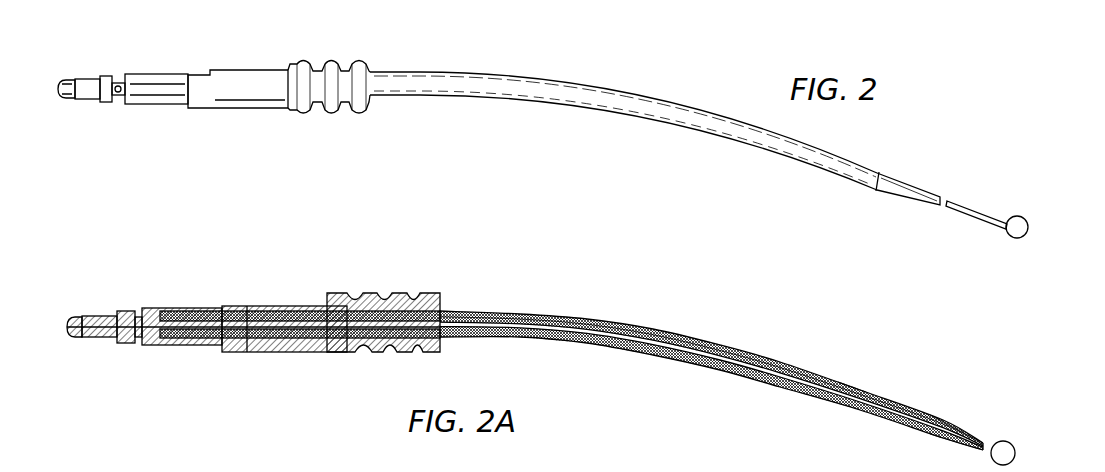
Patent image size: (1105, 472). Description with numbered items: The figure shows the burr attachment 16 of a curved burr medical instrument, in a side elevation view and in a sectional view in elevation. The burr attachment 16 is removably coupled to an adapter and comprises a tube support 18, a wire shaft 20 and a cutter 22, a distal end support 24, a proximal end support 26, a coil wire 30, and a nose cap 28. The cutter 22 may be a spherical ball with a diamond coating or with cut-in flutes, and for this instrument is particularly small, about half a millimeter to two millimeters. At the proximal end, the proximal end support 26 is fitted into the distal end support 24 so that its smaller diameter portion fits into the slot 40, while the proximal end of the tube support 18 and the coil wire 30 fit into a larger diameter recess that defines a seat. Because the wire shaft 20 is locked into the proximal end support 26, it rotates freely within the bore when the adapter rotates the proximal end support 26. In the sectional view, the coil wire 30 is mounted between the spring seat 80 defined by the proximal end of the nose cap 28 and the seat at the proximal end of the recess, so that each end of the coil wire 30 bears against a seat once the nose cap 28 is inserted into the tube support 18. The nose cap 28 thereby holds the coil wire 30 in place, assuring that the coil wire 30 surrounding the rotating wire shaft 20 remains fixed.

In FIG. 2, the burr attachment 16 is at (500, 40).
In FIG. 2, the tube support 18 is at (553, 105).
In FIG. 2A, the tube support 18 is at (772, 360).
In FIG. 2, the wire shaft 20 is at (992, 208).
In FIG. 2A, the wire shaft 20 is at (717, 343).
In FIG. 2, the cutter 22 is at (1013, 240).
In FIG. 2A, the cutter 22 is at (1012, 444).
In FIG. 2, the distal end support 24 is at (280, 65).
In FIG. 2A, the distal end support 24 is at (270, 303).
In FIG. 2, the proximal end support 26 is at (148, 72).
In FIG. 2A, the proximal end support 26 is at (157, 307).
In FIG. 2A, the nose cap 28 is at (947, 421).
In FIG. 2A, the coil wire 30 is at (663, 329).
In FIG. 2A, the slot 40 is at (310, 350).
In FIG. 2A, the spring seat 80 is at (842, 383).